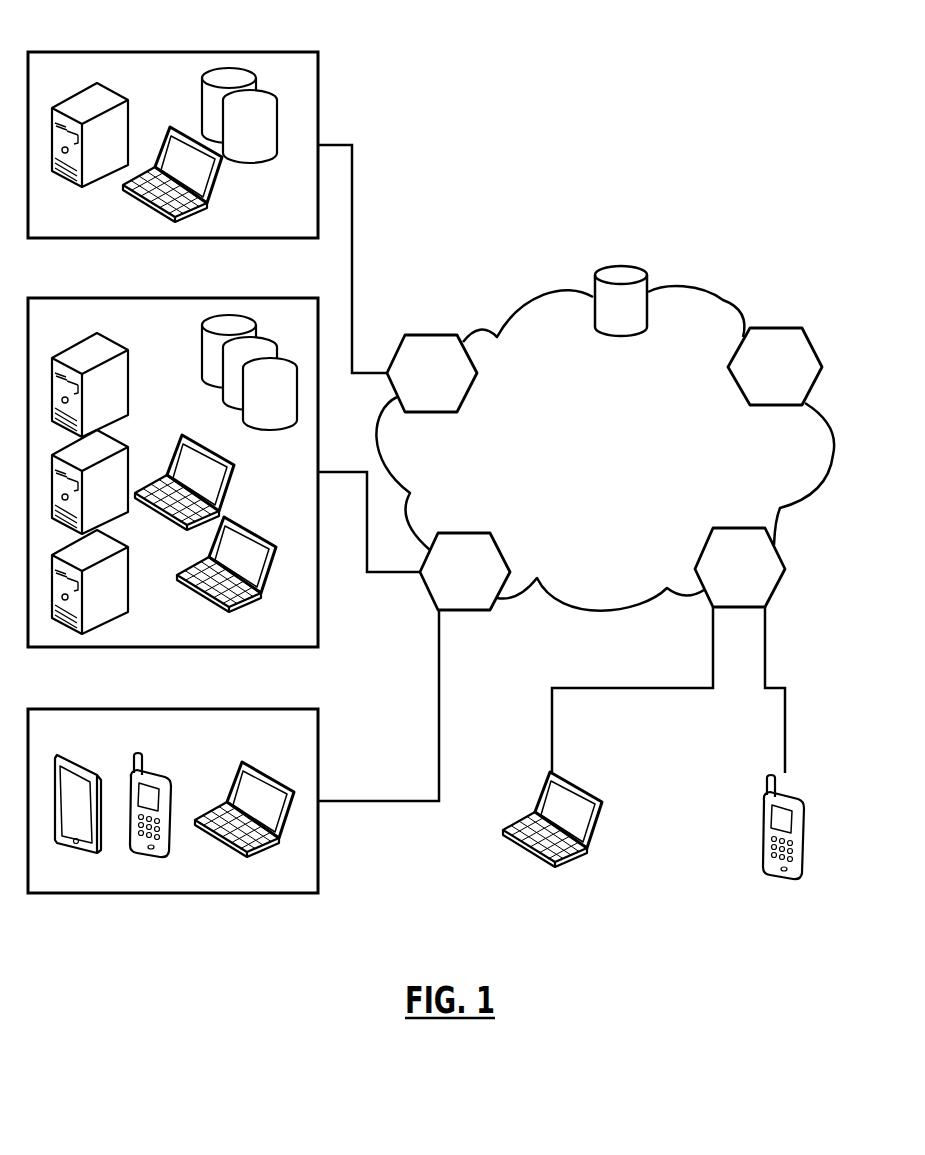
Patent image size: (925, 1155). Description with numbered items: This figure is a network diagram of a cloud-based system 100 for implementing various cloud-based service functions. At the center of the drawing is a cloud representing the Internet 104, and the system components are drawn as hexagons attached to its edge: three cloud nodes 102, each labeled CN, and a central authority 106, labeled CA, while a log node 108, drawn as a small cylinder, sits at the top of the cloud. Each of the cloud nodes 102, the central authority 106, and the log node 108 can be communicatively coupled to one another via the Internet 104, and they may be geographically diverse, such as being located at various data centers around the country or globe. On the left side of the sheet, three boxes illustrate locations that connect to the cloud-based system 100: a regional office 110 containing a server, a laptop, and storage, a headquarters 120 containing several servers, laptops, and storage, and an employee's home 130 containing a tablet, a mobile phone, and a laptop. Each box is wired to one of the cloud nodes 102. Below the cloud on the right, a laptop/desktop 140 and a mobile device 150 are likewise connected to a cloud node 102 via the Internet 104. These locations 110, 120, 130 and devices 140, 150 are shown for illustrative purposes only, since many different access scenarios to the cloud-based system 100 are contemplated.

The cloud-based system 100 is at (634, 91).
The cloud node 102 is at (428, 335).
The Internet 104 is at (723, 300).
The central authority 106 is at (785, 328).
The log node 108 is at (623, 267).
The regional office 110 is at (238, 52).
The headquarters 120 is at (242, 298).
The employee's home 130 is at (247, 709).
The laptop/desktop 140 is at (598, 800).
The mobile device 150 is at (758, 818).